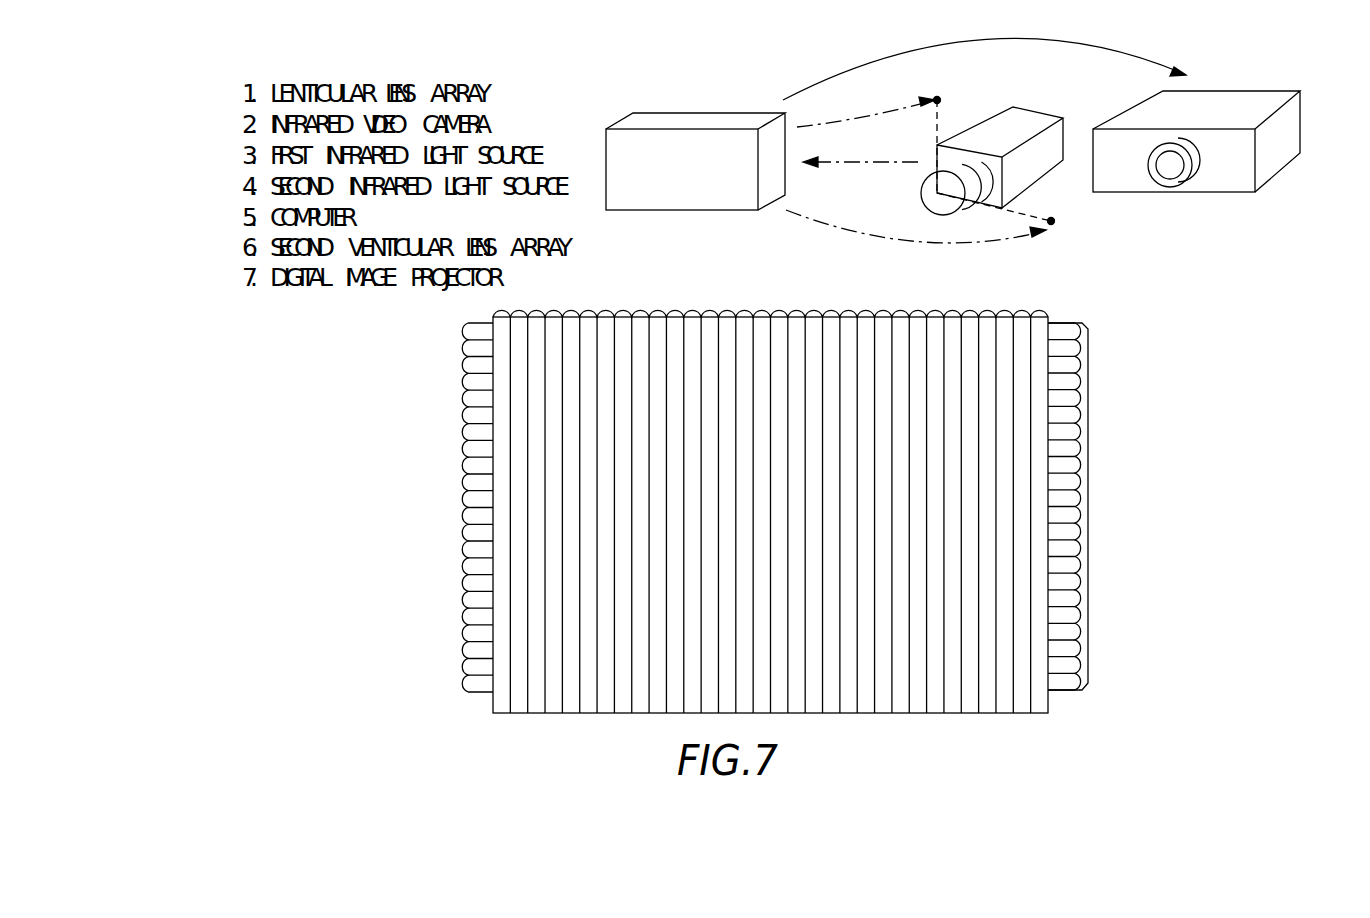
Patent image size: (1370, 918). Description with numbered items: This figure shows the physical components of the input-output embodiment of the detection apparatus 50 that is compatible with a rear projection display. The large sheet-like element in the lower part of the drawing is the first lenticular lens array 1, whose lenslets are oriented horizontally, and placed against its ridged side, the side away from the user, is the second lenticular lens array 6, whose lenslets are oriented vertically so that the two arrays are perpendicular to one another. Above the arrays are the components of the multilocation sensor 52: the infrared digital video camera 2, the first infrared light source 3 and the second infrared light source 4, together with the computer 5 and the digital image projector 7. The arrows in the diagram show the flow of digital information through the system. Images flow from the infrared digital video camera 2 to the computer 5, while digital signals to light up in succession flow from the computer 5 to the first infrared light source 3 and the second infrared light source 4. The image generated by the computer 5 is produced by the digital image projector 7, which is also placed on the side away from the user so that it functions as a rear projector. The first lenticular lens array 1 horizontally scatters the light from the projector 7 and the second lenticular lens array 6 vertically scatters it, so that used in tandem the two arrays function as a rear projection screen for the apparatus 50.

The lenticular lens array 1 is at (762, 281).
The infrared digital video camera 2 is at (1039, 171).
The first infrared light source 3 is at (940, 97).
The second infrared light source 4 is at (1054, 219).
The computer 5 is at (684, 172).
The second lenticular lens array 6 is at (1078, 493).
The digital image projector 7 is at (1286, 152).
The detection apparatus 50 is at (1268, 598).
The multilocation sensor 52 is at (1288, 238).